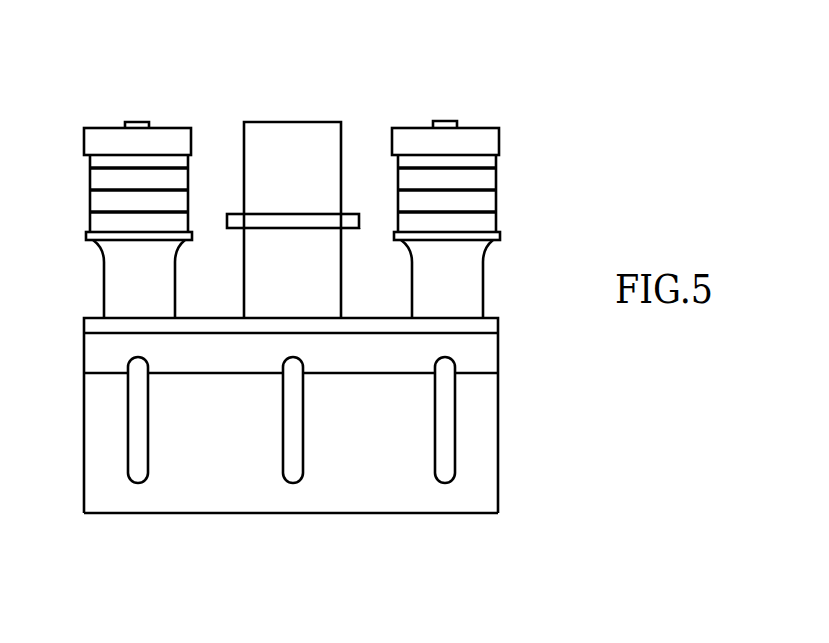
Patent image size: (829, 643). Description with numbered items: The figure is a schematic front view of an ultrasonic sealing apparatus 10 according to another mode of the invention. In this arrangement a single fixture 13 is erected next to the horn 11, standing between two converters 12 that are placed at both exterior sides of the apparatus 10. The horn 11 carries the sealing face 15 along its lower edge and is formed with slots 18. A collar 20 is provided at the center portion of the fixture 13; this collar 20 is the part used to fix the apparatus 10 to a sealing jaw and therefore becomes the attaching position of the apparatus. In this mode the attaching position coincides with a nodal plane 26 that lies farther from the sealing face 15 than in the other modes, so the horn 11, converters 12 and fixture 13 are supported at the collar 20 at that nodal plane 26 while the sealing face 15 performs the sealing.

The ultrasonic sealing apparatus 10 is at (508, 95).
The horn 11 is at (508, 355).
The converter 12 is at (495, 192).
The fixture 13 is at (297, 122).
The sealing face 15 is at (211, 513).
The slot 18 is at (445, 483).
The collar 20 is at (238, 214).
The nodal plane 26 is at (350, 233).